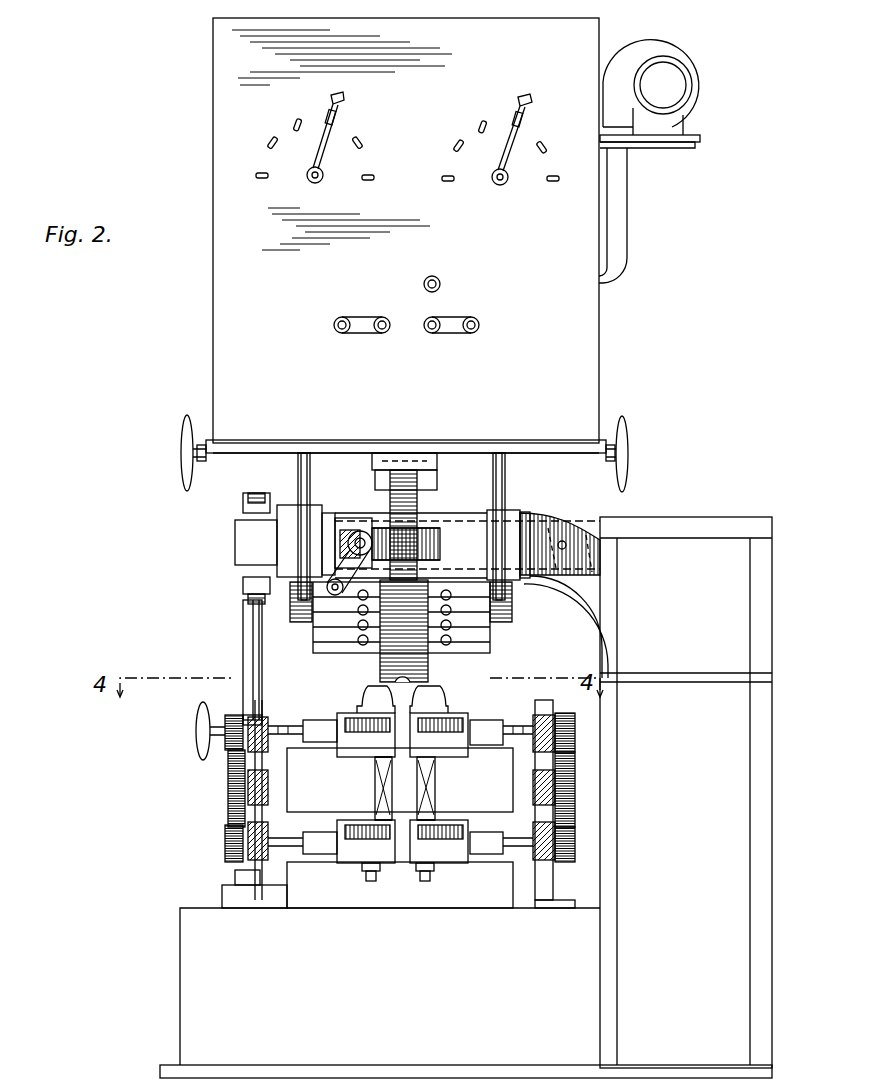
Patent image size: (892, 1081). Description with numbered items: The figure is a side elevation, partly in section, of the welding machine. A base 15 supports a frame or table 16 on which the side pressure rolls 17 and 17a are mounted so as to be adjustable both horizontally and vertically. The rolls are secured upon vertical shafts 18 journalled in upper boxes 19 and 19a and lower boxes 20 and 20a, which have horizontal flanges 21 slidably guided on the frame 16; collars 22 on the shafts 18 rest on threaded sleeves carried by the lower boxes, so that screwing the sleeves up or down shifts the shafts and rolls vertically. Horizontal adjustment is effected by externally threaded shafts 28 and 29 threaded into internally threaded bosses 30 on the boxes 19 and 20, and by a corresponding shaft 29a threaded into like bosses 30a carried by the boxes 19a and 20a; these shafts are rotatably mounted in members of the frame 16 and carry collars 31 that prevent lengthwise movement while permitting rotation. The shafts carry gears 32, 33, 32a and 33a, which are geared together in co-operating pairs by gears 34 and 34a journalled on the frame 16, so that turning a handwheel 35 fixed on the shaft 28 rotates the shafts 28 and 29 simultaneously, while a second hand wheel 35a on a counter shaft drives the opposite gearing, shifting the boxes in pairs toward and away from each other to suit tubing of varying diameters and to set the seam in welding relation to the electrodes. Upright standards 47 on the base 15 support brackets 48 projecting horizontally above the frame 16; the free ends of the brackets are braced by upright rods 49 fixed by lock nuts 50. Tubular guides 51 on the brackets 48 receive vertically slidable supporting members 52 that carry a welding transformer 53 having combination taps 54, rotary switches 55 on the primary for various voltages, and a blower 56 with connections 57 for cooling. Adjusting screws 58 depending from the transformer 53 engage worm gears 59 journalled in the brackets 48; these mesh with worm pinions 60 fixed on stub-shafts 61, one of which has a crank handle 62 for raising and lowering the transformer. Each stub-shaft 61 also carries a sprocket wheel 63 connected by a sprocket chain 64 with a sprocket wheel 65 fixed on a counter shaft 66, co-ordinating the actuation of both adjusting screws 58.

The base 15 is at (182, 990).
The frame or table 16 is at (327, 752).
The side pressure roll 17 is at (375, 700).
The side pressure roll 17a is at (440, 706).
The vertical shaft 18 is at (378, 797).
The upper box 19 is at (358, 745).
The upper box 19a is at (465, 742).
The lower box 20 is at (370, 866).
The lower box 20a is at (452, 856).
The horizontal flange 21 is at (490, 708).
The collar 22 is at (372, 822).
The externally threaded shaft 28 is at (286, 726).
The externally threaded shaft 29 is at (290, 846).
The externally threaded shaft 29a is at (510, 858).
The internally threaded boss 30 is at (315, 718).
The bearing 30a is at (510, 718).
The collar 31 is at (262, 722).
The gear 32 is at (232, 720).
The gear 32a is at (578, 735).
The gear 33 is at (228, 840).
The gear 33a is at (578, 845).
The gear 34 is at (230, 787).
The gear 34a is at (578, 795).
The handwheel 35 is at (203, 739).
The hand wheel 35a is at (237, 712).
The upright standard 47 is at (756, 882).
The bracket 48 is at (577, 590).
The upright rod 49 is at (243, 612).
The lock nut 50 is at (243, 518).
The tubular guide 51 is at (290, 537).
The supporting member 52 is at (300, 484).
The transformer 53 is at (590, 345).
The combination taps 54 is at (366, 334).
The rotary switch 55 is at (346, 104).
The blower 56 is at (700, 95).
The connections 57 is at (620, 221).
The adjusting screw 58 is at (417, 492).
The worm gear 59 is at (440, 548).
The worm pinion 60 is at (363, 530).
The stub-shaft 61 is at (345, 546).
The crank handle 62 is at (328, 596).
The sprocket wheel 63 is at (350, 534).
The sprocket chain 64 is at (495, 626).
The sprocket wheel 65 is at (598, 590).
The counter shaft 66 is at (567, 532).